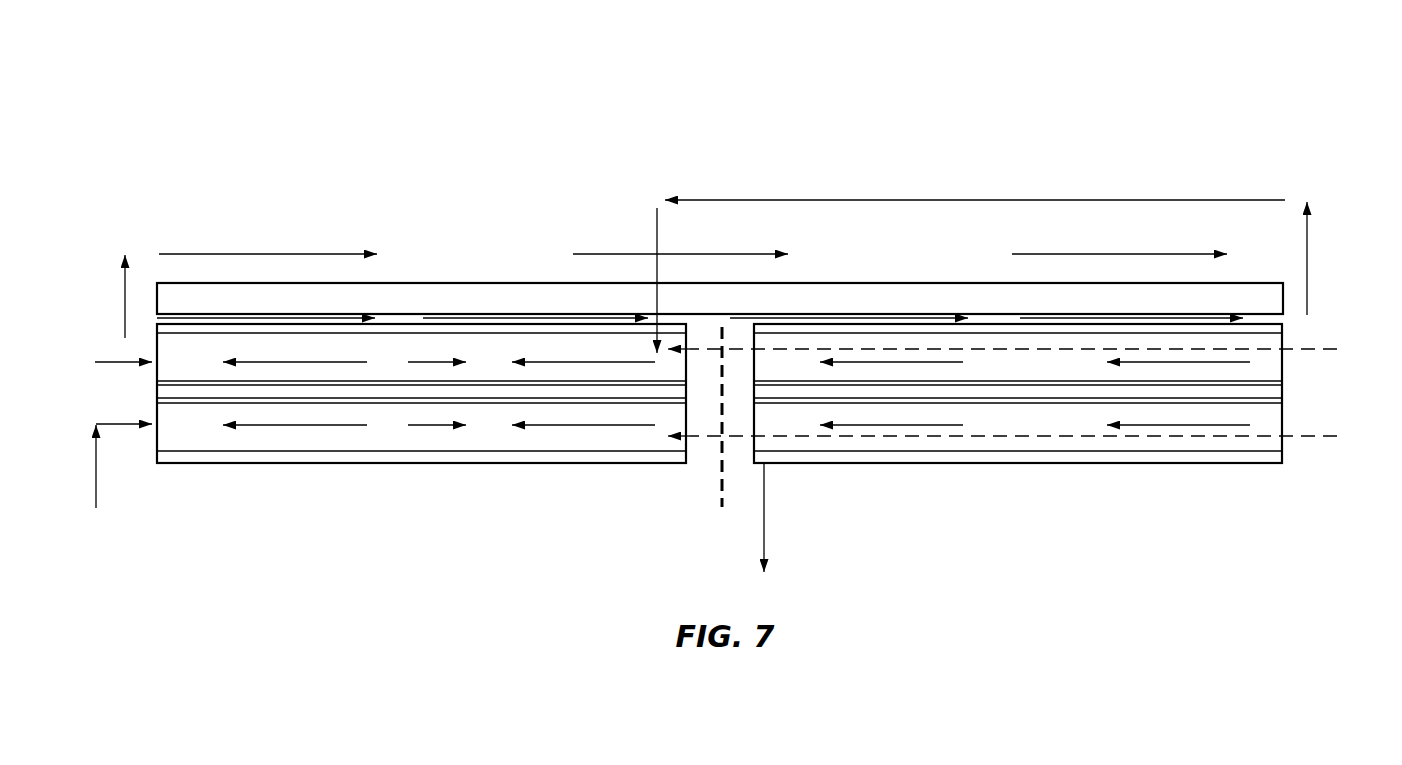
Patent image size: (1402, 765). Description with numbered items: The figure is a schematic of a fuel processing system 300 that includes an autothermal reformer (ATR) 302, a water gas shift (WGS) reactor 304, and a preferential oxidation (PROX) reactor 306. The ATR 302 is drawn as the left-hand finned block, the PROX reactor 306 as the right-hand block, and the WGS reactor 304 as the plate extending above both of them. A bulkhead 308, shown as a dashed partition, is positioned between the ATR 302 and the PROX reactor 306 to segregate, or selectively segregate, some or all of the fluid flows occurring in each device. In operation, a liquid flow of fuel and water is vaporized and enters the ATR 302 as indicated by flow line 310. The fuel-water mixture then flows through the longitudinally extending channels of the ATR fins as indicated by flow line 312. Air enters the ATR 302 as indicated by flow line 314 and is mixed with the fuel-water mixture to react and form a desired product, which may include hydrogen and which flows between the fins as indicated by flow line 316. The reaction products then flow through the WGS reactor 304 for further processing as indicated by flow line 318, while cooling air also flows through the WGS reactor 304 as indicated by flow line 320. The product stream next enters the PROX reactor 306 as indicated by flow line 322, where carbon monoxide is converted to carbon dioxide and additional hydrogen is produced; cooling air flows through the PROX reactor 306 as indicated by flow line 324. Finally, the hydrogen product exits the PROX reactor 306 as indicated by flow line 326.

The system 300 is at (472, 157).
The autothermal reformer 302 is at (386, 463).
The water gas shift reactor 304 is at (505, 280).
The preferential oxidation reactor 306 is at (1137, 463).
The bulkhead 308 is at (721, 480).
The flow line 310 is at (96, 488).
The flow line 312 is at (432, 427).
The flow line 314 is at (657, 222).
The flow line 316 is at (287, 427).
The flow line 318 is at (253, 254).
The flow line 320 is at (157, 318).
The flow line 322 is at (1203, 423).
The flow line 324 is at (1315, 348).
The flow line 326 is at (764, 517).